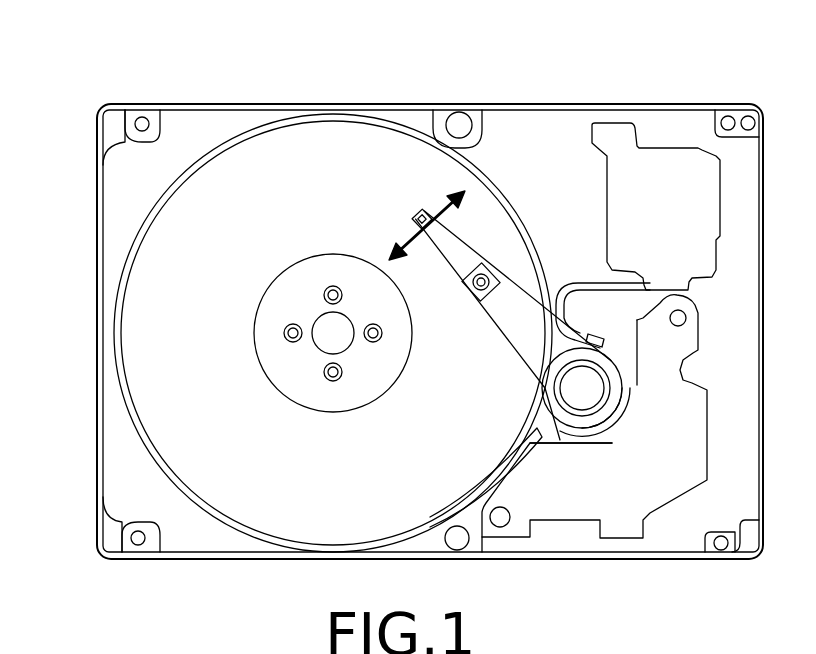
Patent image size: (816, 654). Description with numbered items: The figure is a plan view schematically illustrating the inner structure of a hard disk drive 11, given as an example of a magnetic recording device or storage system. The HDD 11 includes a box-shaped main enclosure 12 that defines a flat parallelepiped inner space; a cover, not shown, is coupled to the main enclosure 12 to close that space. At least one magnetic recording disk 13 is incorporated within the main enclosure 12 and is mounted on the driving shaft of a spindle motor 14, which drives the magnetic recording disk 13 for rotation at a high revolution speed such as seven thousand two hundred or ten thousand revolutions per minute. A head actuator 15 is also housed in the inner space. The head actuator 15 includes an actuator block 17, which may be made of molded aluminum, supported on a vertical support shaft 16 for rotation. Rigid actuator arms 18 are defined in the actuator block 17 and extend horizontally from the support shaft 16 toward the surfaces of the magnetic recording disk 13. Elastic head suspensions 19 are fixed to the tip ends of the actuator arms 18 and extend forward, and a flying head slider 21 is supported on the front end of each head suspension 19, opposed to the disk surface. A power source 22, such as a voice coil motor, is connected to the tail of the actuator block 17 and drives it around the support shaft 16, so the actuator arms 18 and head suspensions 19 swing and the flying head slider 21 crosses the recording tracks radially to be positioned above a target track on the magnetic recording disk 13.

The hard disk drive 11 is at (333, 105).
The main enclosure 12 is at (100, 190).
The magnetic recording disk 13 is at (123, 264).
The spindle motor 14 is at (318, 348).
The head actuator 15 is at (518, 283).
The vertical support shaft 16 is at (603, 398).
The actuator block 17 is at (548, 407).
The actuator arm 18 is at (513, 333).
The elastic head suspension 19 is at (462, 272).
The flying head slider 21 is at (417, 218).
The power source 22 is at (588, 438).